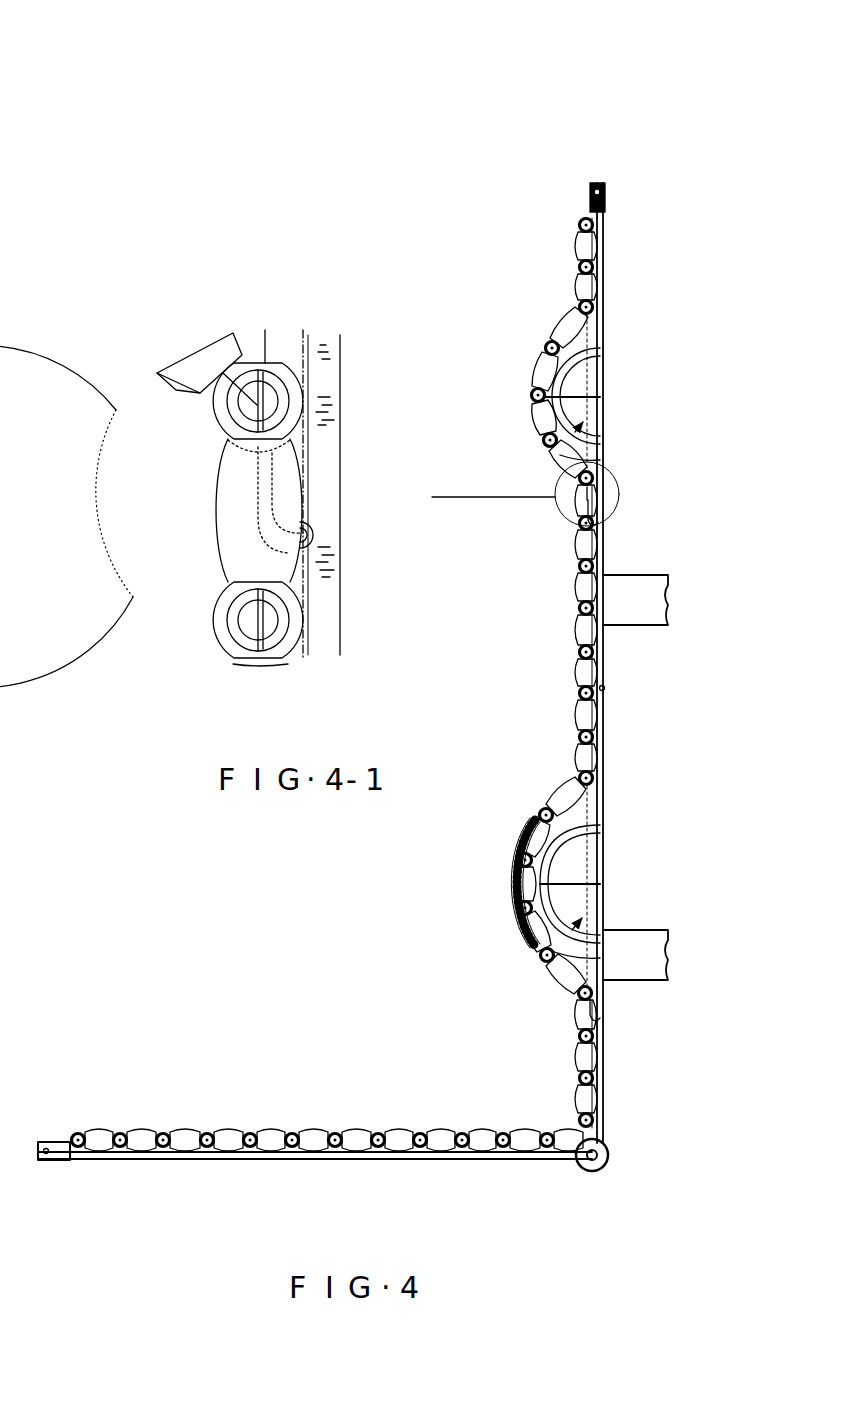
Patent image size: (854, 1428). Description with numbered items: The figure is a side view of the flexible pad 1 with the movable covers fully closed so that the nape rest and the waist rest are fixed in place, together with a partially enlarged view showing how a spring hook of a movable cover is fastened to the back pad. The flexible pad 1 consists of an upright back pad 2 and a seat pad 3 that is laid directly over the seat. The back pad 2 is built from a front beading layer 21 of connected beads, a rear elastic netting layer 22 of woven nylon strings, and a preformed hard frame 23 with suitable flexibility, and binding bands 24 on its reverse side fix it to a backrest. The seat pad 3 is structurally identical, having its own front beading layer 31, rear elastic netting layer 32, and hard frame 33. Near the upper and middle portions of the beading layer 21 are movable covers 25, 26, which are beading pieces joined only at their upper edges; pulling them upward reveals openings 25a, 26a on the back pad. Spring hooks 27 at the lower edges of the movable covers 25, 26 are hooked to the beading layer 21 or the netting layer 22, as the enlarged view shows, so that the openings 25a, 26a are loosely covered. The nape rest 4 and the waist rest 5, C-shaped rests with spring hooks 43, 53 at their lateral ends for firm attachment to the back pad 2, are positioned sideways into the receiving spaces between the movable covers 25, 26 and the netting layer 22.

In FIG. 4, the flexible pad 1 is at (634, 96).
In FIG. 4, the back pad 2 is at (540, 214).
In FIG. 4, the seat pad 3 is at (293, 1054).
In FIG. 4, the nape rest 4 is at (570, 410).
In FIG. 4, the waist rest 5 is at (558, 854).
In FIG. 4, the front beading layer 21 is at (578, 628).
In FIG. 4-1, the front beading layer 21 is at (208, 496).
In FIG. 4, the rear elastic netting layer 22 is at (602, 688).
In FIG. 4-1, the rear elastic netting layer 22 is at (306, 347).
In FIG. 4, the hard frame 23 is at (600, 292).
In FIG. 4-1, the hard frame 23 is at (306, 515).
In FIG. 4, the binding bands 24 is at (650, 570).
In FIG. 4, the movable cover 25 is at (526, 358).
In FIG. 4-1, the movable cover 25 is at (168, 381).
In FIG. 4, the opening 25a is at (582, 460).
In FIG. 4, the movable cover 26 is at (510, 881).
In FIG. 4, the opening 26a is at (580, 960).
In FIG. 4, the spring hooks 27 is at (570, 523).
In FIG. 4-1, the spring hooks 27 is at (266, 510).
In FIG. 4, the front beading layer 31 is at (226, 1122).
In FIG. 4, the rear elastic netting layer 32 is at (470, 1162).
In FIG. 4, the hard frame 33 is at (165, 1162).
In FIG. 4, the spring hooks 43 is at (582, 390).
In FIG. 4, the spring hooks 53 is at (582, 873).